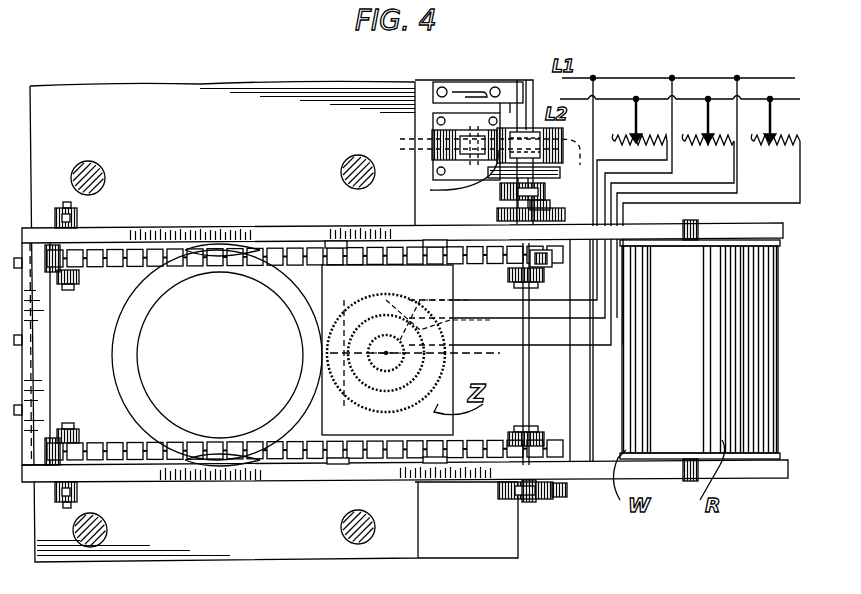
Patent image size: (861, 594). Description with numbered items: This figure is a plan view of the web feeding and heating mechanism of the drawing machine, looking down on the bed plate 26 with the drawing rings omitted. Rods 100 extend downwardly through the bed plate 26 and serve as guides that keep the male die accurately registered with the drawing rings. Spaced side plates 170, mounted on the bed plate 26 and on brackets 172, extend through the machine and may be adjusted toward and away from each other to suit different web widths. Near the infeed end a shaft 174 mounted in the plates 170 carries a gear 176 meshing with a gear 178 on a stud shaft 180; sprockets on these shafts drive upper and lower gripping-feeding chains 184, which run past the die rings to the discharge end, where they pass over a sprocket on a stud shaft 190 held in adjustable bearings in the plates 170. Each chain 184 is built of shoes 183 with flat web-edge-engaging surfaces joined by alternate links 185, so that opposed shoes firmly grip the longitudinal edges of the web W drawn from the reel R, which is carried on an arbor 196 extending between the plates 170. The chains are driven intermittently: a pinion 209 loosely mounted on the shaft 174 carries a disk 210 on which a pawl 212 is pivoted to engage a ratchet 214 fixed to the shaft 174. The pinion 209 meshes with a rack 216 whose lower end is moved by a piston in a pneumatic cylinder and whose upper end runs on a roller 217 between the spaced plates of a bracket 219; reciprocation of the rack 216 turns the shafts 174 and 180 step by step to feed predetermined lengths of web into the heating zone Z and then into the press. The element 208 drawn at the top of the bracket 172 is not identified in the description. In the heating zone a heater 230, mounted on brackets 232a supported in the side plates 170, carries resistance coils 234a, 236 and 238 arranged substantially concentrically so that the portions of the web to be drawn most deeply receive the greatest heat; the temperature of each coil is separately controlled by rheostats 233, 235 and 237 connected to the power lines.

The bed plate 26 is at (392, 552).
The rods 100 is at (98, 166).
The plates 170 is at (256, 228).
The brackets 172 is at (435, 82).
The shaft 174 is at (530, 410).
The gear 176 is at (497, 216).
The gear 178 is at (552, 206).
The stud shaft 180 is at (536, 500).
The shoes 183 is at (168, 250).
The chains 184 is at (330, 247).
The links 185 is at (102, 268).
The stud shaft 190 is at (76, 212).
The arbor 196 is at (705, 485).
The mounting bracket 208 is at (478, 74).
The pinion 209 is at (560, 172).
The disk 210 is at (497, 182).
The pawl 212 is at (548, 190).
The ratchet 214 is at (520, 185).
The rack 216 is at (430, 190).
The roller 217 is at (402, 138).
The bracket 219 is at (425, 150).
The heater 230 is at (440, 285).
The brackets 232a is at (427, 242).
The rheostat 233 is at (616, 138).
The contact ring 234a is at (344, 300).
The rheostat 235 is at (686, 138).
The resistance coil 236 is at (360, 400).
The rheostat 237 is at (754, 138).
The resistance coil 238 is at (330, 354).